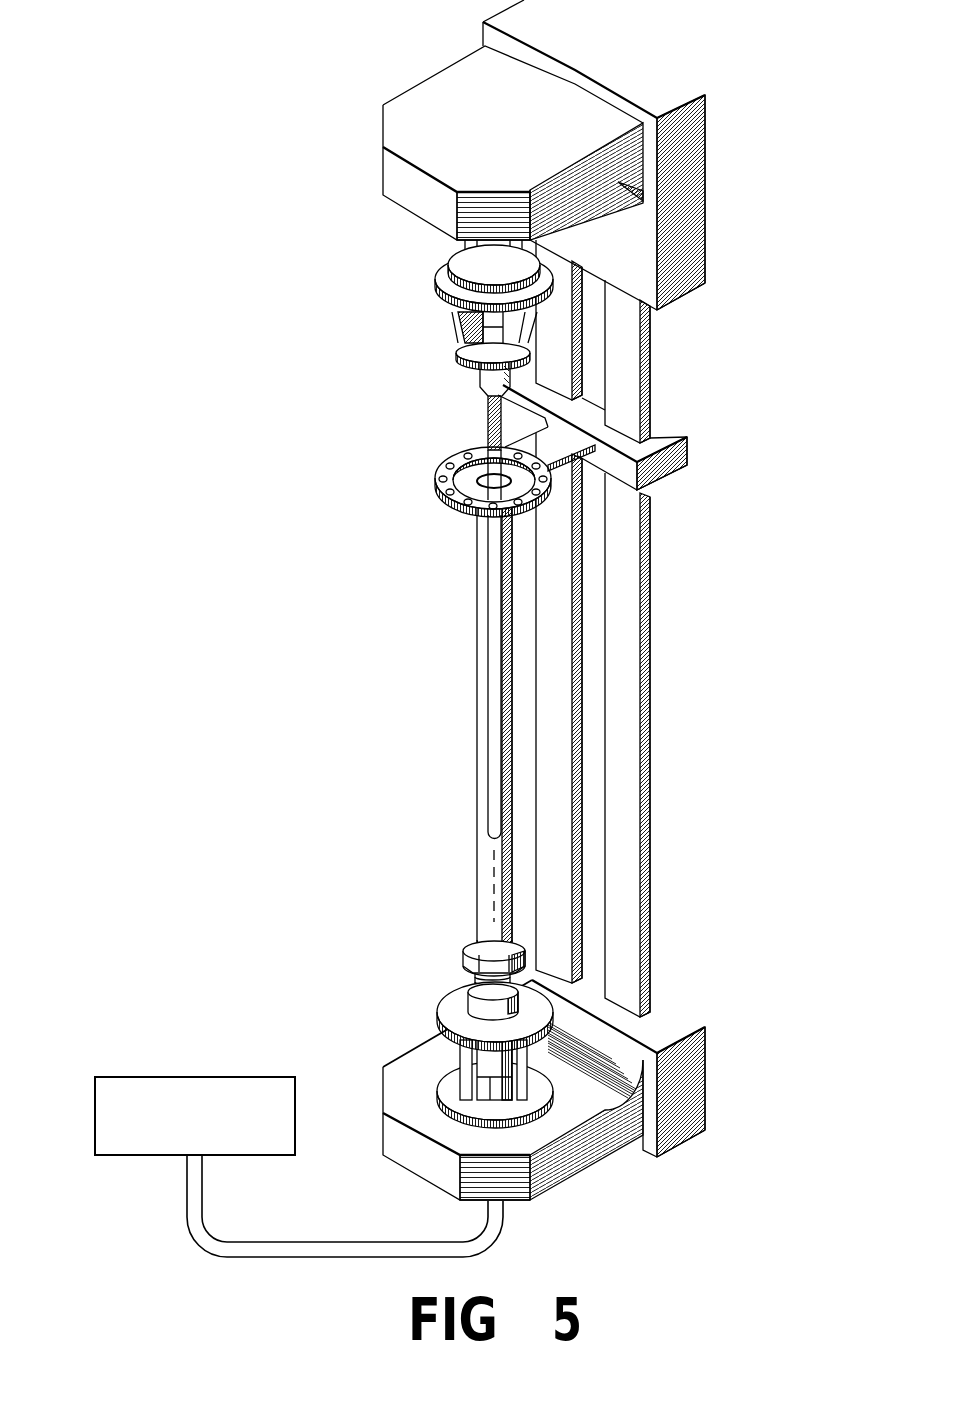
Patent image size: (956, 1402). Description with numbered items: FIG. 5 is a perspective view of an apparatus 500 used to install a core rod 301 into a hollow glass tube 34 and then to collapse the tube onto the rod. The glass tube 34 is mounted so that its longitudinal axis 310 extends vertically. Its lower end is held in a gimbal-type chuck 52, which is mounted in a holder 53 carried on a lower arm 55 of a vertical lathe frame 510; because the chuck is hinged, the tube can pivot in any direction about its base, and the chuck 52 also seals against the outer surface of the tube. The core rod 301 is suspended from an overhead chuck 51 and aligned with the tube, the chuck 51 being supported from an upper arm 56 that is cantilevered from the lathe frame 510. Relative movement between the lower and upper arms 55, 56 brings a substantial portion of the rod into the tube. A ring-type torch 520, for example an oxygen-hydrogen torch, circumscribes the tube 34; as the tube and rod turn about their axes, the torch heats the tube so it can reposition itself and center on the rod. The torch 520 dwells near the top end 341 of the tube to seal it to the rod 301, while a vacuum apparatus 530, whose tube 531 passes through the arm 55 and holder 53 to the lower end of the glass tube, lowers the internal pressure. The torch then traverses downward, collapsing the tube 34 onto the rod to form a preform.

The apparatus 500 is at (231, 150).
The upper arm 56 is at (417, 100).
The overhead chuck 51 is at (454, 324).
The core rod 301 is at (486, 412).
The top end 341 is at (462, 461).
The ring-type torch 520 is at (437, 482).
The glass tube 34 is at (479, 845).
The longitudinal axis 310 is at (494, 888).
The gimbal-type chuck 52 is at (471, 983).
The holder 53 is at (455, 1060).
The lower arm 55 is at (393, 1090).
The vertical lathe frame 510 is at (673, 1013).
The vacuum apparatus 530 is at (116, 1075).
The tube 531 is at (359, 1241).